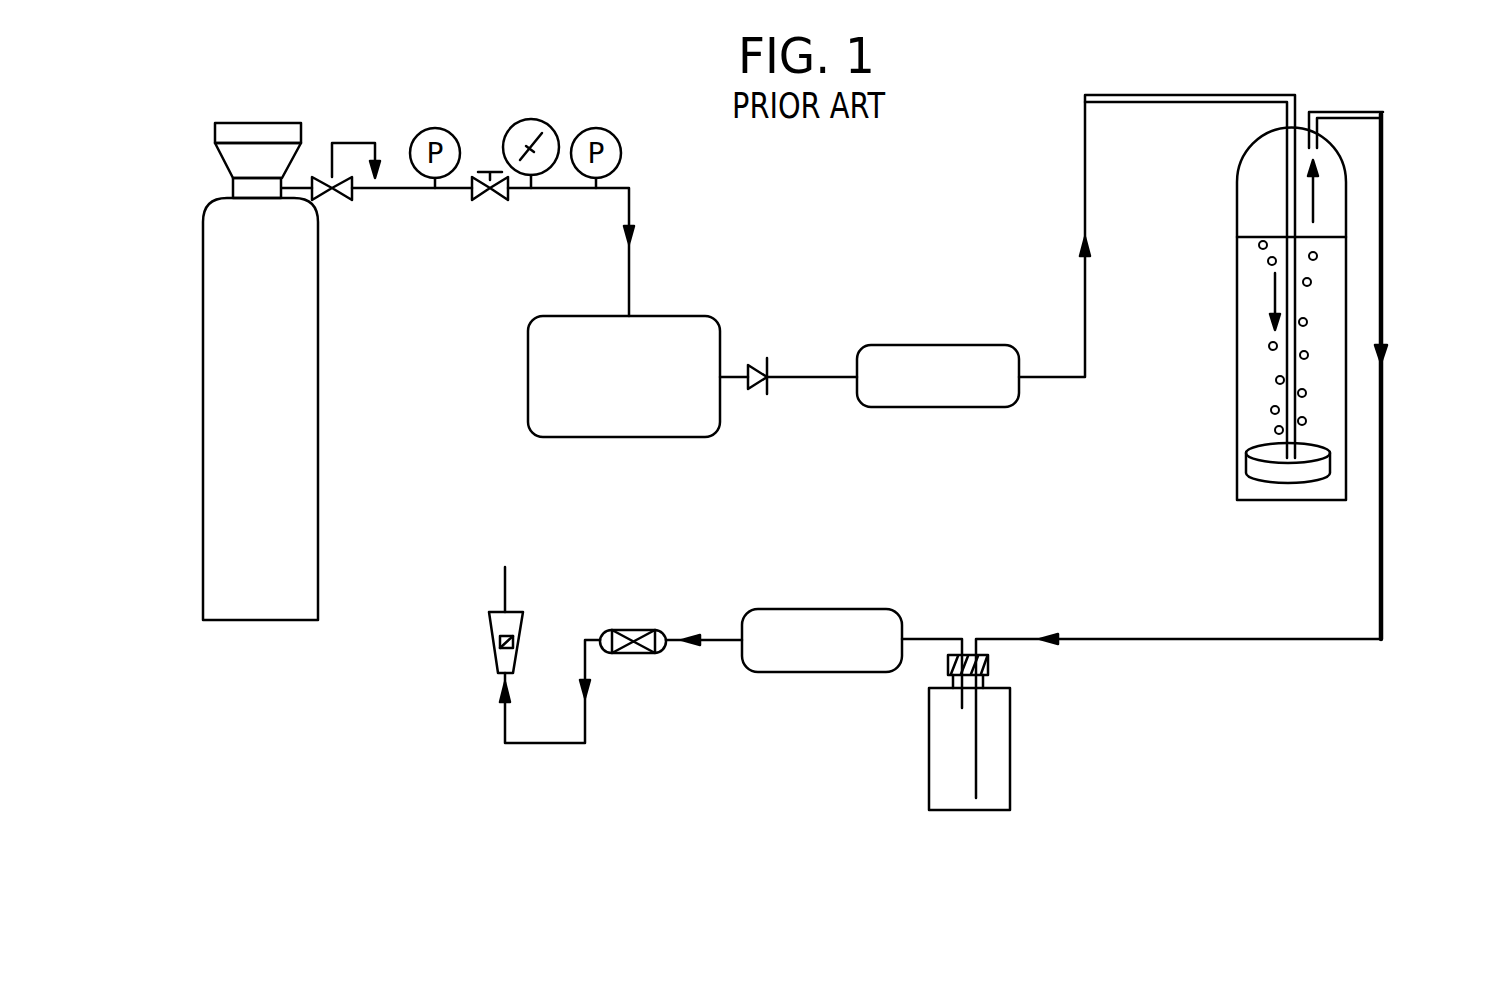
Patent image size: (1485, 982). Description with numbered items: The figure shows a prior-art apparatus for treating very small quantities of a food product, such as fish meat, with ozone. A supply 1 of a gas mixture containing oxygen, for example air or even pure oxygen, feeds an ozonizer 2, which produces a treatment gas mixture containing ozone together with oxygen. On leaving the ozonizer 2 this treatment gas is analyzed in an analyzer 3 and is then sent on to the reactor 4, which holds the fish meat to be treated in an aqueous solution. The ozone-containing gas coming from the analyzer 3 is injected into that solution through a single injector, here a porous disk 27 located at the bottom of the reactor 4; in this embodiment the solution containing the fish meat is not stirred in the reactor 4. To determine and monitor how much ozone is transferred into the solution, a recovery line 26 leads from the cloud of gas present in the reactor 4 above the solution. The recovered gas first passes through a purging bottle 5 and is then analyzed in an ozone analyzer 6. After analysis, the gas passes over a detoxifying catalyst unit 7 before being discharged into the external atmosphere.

The supply 1 is at (203, 450).
The ozonizer 2 is at (684, 315).
The analyzer 3 is at (907, 407).
The reactor 4 is at (1237, 362).
The purging bottle 5 is at (1010, 782).
The ozone analyzer 6 is at (810, 672).
The detoxifying catalyst unit 7 is at (618, 630).
The recovery line 26 is at (1383, 222).
The porous disk 27 is at (1293, 487).